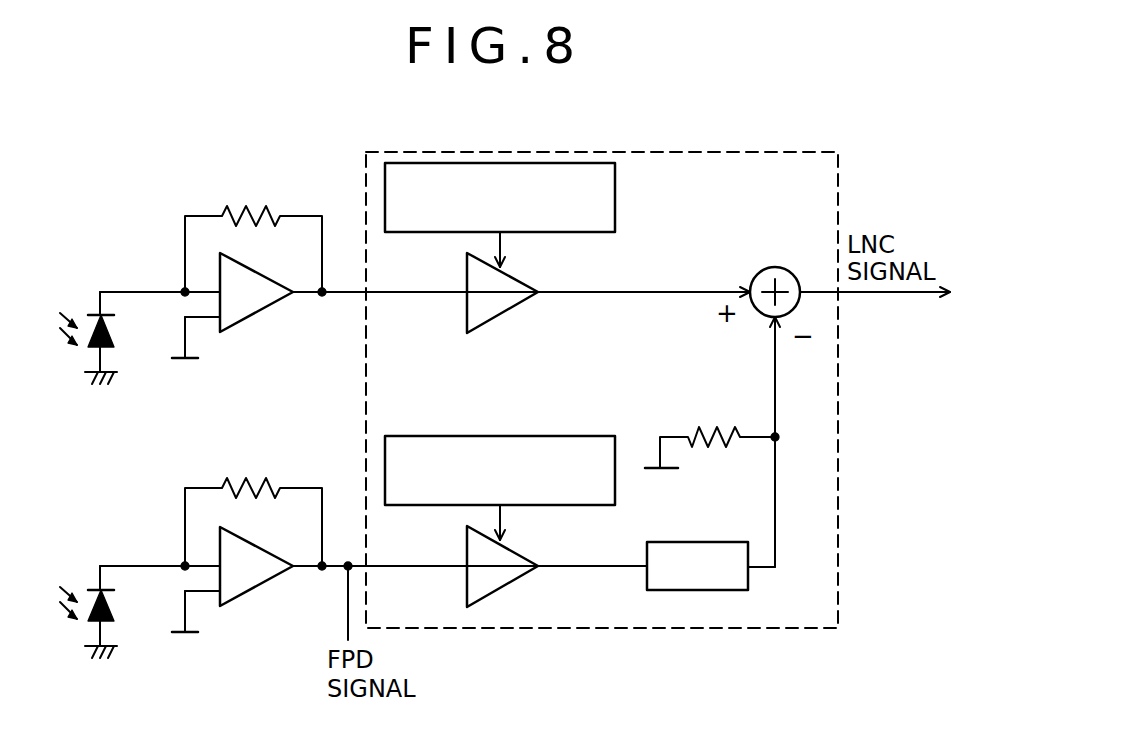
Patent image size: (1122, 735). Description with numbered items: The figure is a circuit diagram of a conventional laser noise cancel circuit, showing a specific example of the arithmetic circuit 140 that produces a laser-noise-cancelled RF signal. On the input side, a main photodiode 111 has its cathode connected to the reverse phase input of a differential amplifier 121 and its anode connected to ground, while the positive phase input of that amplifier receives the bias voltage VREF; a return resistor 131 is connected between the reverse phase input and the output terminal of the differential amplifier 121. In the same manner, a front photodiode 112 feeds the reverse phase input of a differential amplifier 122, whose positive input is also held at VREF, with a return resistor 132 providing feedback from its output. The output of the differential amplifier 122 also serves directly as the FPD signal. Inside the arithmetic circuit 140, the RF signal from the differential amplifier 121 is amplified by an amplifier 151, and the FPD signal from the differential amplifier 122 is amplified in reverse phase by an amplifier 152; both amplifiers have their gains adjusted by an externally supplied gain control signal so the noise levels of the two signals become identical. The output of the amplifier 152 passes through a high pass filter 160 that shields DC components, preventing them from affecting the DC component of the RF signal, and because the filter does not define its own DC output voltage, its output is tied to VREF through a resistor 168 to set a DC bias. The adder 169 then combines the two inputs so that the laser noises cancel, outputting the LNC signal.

The main photodiode 111 is at (93, 307).
The front photodiode 112 is at (93, 582).
The differential amplifier 121 is at (267, 308).
The differential amplifier 122 is at (262, 585).
The return resistor 131 is at (262, 203).
The return resistor 132 is at (240, 478).
The arithmetic circuit 140 is at (748, 152).
The amplifier 151 is at (517, 307).
The amplifier 152 is at (517, 580).
The high pass filter 160 is at (750, 578).
The resistor 168 is at (718, 422).
The adder 169 is at (777, 267).